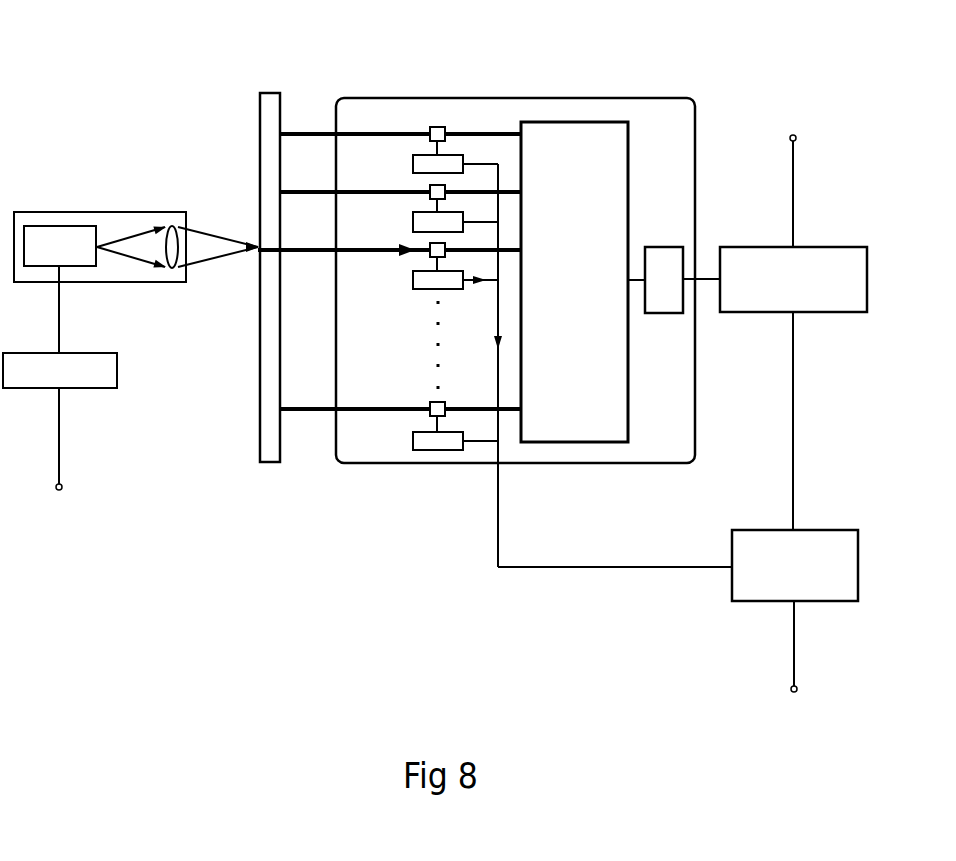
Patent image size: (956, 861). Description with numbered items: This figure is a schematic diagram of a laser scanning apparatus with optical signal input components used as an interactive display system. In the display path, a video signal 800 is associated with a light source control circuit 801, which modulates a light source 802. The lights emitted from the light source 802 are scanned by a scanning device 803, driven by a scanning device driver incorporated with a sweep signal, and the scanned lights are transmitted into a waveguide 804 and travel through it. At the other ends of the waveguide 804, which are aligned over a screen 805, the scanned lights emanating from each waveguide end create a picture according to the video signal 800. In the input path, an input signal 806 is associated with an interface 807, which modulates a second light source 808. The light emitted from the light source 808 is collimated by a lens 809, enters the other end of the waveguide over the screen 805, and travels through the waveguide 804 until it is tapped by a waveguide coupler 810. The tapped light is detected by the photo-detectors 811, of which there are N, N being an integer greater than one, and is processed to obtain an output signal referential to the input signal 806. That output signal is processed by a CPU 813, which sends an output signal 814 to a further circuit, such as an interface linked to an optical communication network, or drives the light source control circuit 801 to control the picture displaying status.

The video signal 800 is at (788, 175).
The light source control circuit 801 is at (840, 302).
The light source 802 is at (673, 257).
The scanning device 803 is at (607, 133).
The waveguide 804 is at (308, 125).
The screen 805 is at (265, 115).
The input signal 806 is at (60, 454).
The interface 807 is at (97, 363).
The light source 808 is at (75, 238).
The lens 809 is at (163, 248).
The waveguide coupler 810 is at (440, 127).
The photo-detector 811 is at (418, 440).
The CPU (central processing unit) 813 is at (757, 582).
The output signal 814 is at (796, 662).